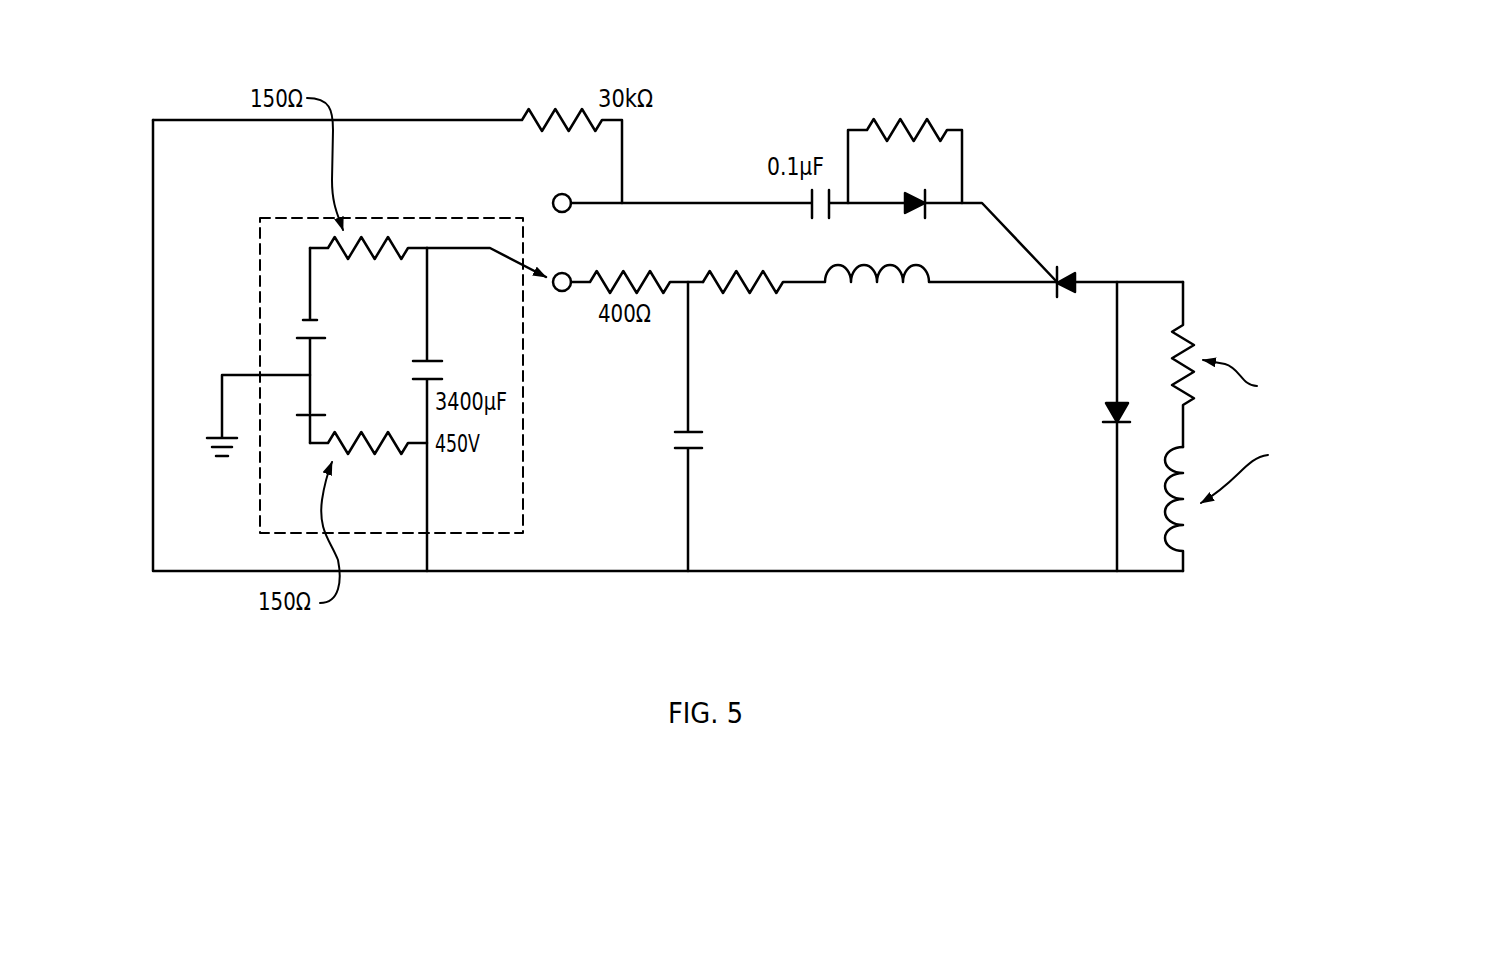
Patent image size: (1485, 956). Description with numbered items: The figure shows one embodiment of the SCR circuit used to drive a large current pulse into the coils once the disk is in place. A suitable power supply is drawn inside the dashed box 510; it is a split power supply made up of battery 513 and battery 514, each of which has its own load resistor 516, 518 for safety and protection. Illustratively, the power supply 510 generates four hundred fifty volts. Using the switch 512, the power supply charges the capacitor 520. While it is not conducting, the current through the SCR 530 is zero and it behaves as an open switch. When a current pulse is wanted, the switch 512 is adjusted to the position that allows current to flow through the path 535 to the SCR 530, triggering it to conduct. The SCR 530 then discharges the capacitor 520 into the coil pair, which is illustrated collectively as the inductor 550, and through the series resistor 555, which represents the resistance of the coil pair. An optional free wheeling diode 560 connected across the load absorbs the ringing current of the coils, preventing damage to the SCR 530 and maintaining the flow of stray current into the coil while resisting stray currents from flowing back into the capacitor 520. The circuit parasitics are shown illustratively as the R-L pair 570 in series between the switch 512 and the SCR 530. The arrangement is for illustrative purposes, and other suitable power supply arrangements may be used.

The power supply 510 is at (290, 217).
The switch 512 is at (537, 190).
The battery 513 is at (300, 339).
The battery 514 is at (298, 416).
The load resistor 516 is at (350, 252).
The load resistor 518 is at (355, 448).
The capacitor 520 is at (697, 452).
The SCR 530 is at (1068, 296).
The path 535 is at (931, 79).
The inductor 550 is at (1167, 538).
The series resistor 555 is at (1188, 326).
The free wheeling diode 560 is at (1110, 425).
The R-L pair 570 is at (757, 267).